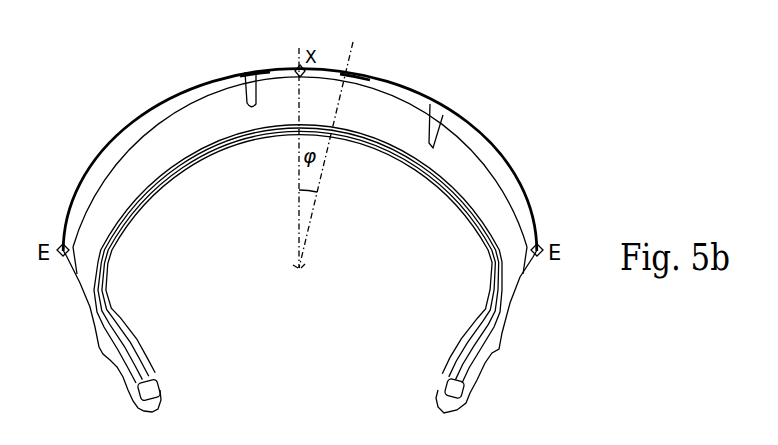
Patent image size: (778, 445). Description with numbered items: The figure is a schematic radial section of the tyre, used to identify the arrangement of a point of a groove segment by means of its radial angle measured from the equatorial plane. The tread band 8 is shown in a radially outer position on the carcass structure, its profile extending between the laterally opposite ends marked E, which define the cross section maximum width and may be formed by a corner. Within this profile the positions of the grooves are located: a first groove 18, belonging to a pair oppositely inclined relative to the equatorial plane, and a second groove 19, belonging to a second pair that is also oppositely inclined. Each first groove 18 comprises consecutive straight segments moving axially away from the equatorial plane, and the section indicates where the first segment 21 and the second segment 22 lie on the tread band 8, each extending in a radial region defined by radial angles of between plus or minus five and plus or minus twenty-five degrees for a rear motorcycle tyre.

The tread band 8 is at (473, 190).
The first groove 18 is at (255, 72).
The second groove 19 is at (445, 99).
The first segment 21 is at (250, 72).
The second segment 22 is at (363, 90).